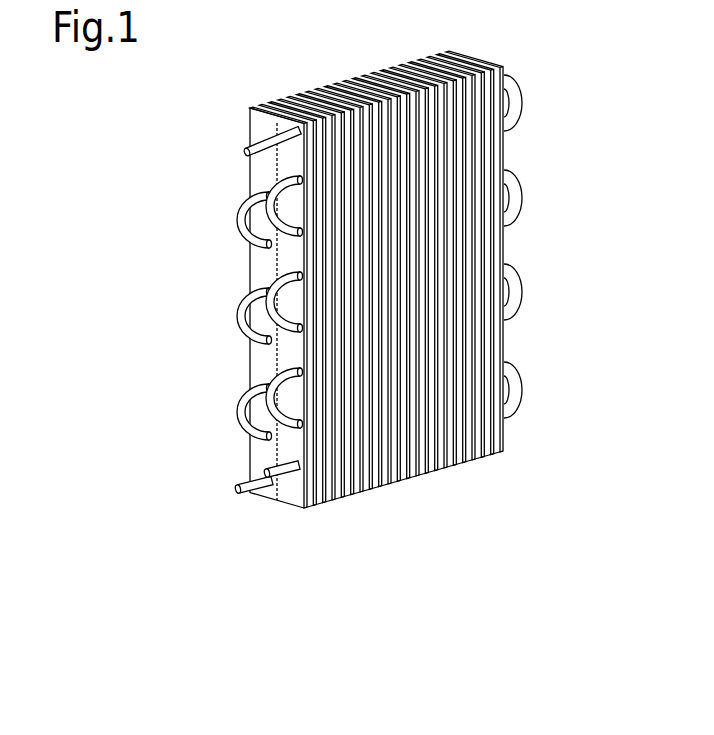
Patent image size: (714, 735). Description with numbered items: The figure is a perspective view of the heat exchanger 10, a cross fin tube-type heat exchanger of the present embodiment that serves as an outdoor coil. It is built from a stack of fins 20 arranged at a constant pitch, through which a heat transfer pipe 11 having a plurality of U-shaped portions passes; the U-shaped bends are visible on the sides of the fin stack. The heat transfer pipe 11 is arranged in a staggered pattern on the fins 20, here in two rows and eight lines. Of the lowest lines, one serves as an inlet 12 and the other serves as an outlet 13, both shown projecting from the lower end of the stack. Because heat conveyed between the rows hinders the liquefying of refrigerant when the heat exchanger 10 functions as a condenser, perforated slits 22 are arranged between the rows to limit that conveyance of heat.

The heat exchanger 10 is at (566, 84).
The heat transfer pipe 11 is at (240, 242).
The inlet 12 is at (237, 490).
The outlet 13 is at (266, 473).
The fin 20 is at (299, 510).
The perforated slit 22 is at (274, 506).